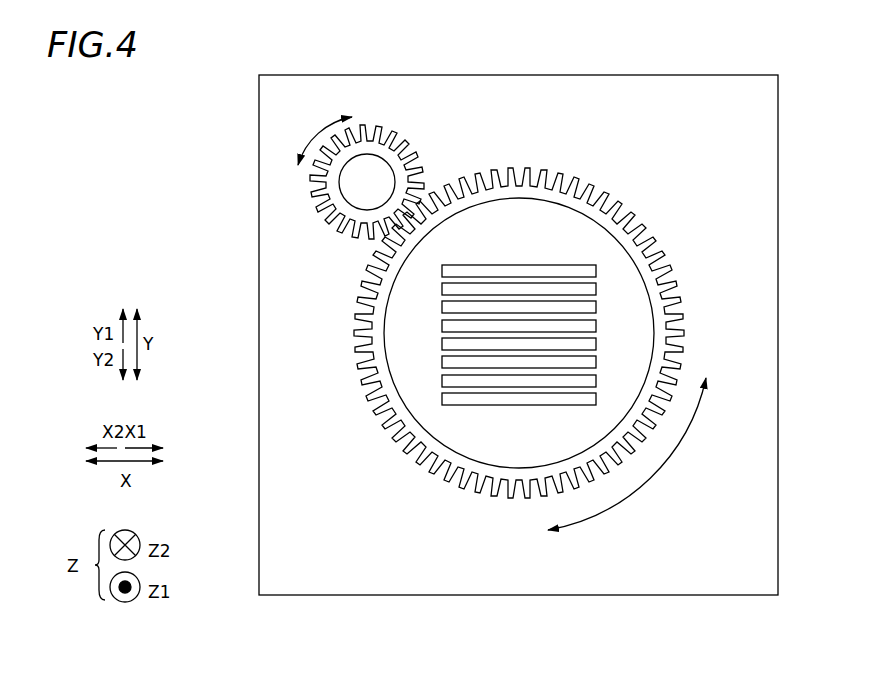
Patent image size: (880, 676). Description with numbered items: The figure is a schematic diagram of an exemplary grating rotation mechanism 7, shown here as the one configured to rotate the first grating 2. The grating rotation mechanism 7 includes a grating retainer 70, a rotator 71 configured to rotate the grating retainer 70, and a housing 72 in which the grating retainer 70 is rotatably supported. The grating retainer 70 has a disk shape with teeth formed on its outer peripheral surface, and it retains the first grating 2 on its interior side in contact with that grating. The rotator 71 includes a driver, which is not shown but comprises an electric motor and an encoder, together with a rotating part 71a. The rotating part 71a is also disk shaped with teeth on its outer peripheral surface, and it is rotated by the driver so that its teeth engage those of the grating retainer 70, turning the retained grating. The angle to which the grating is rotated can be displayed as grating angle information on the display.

The first grating 2 is at (431, 324).
The grating rotation mechanism 7 is at (230, 325).
The grating retainer 70 is at (382, 447).
The rotator 71 is at (376, 189).
The rotating part 71a is at (403, 143).
The housing 72 is at (259, 448).